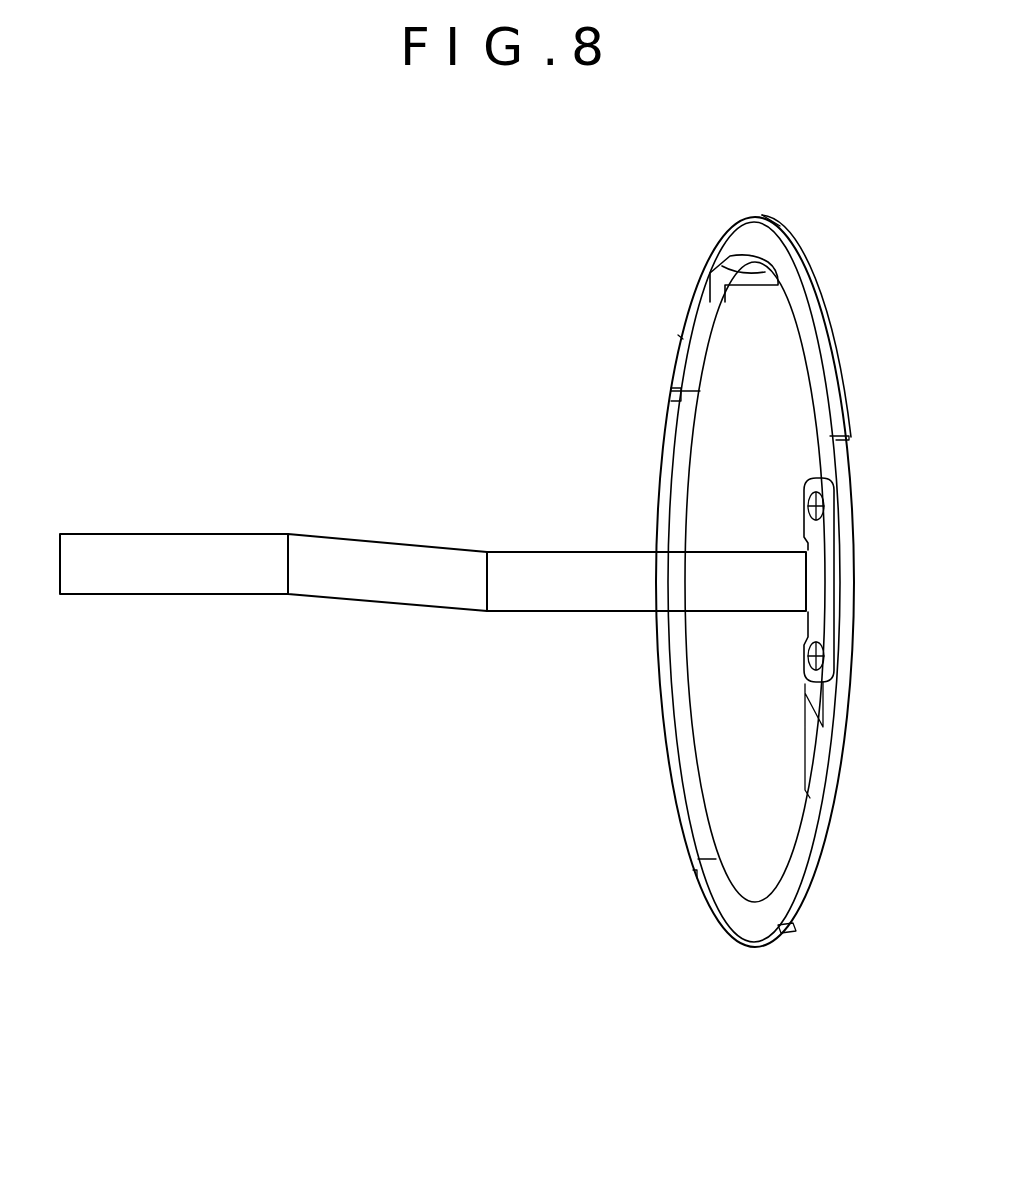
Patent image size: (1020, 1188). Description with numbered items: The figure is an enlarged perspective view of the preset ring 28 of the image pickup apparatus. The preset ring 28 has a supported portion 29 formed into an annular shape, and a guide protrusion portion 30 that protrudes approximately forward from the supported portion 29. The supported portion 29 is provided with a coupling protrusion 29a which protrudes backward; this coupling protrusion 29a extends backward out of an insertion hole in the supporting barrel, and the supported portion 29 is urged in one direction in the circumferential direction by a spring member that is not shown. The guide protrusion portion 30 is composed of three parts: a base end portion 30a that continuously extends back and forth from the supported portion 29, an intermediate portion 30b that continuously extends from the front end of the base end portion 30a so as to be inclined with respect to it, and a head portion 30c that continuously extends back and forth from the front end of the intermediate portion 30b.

The preset ring 28 is at (403, 318).
The supported portion 29 is at (848, 455).
The coupling protrusion 29a is at (763, 288).
The guide protrusion portion 30 is at (120, 594).
The base end portion 30a is at (553, 603).
The intermediate portion 30b is at (372, 588).
The head portion 30c is at (212, 575).